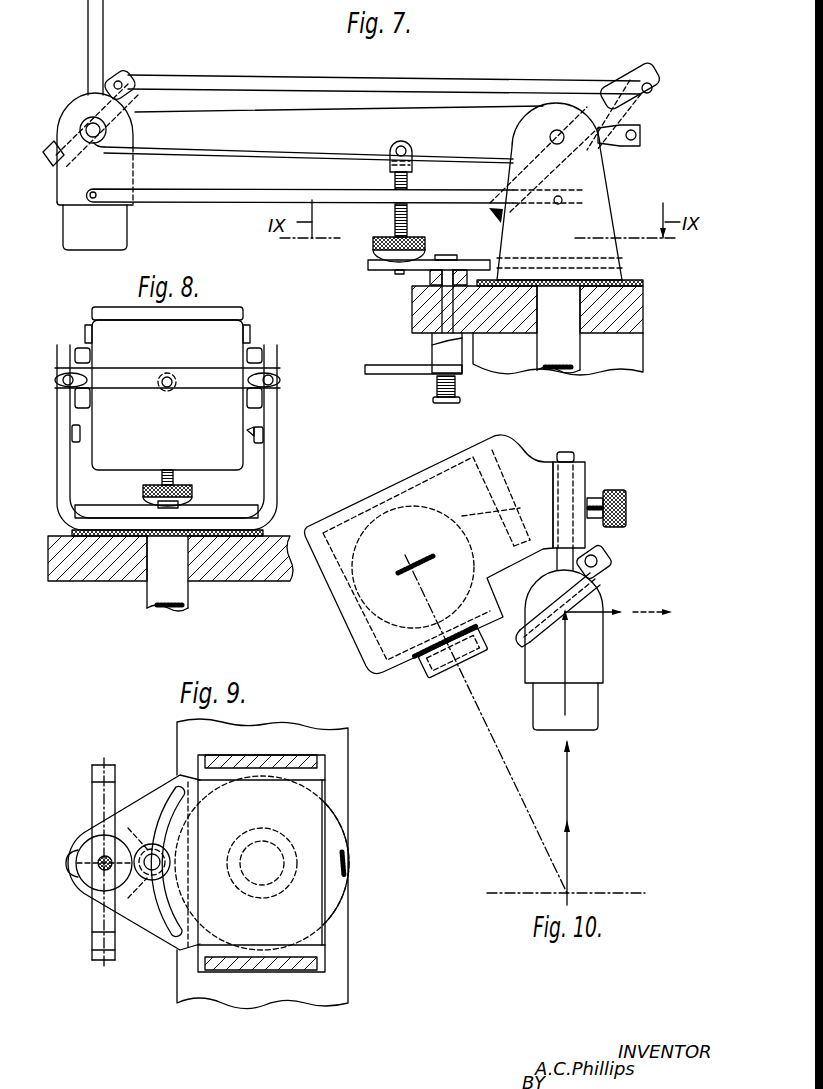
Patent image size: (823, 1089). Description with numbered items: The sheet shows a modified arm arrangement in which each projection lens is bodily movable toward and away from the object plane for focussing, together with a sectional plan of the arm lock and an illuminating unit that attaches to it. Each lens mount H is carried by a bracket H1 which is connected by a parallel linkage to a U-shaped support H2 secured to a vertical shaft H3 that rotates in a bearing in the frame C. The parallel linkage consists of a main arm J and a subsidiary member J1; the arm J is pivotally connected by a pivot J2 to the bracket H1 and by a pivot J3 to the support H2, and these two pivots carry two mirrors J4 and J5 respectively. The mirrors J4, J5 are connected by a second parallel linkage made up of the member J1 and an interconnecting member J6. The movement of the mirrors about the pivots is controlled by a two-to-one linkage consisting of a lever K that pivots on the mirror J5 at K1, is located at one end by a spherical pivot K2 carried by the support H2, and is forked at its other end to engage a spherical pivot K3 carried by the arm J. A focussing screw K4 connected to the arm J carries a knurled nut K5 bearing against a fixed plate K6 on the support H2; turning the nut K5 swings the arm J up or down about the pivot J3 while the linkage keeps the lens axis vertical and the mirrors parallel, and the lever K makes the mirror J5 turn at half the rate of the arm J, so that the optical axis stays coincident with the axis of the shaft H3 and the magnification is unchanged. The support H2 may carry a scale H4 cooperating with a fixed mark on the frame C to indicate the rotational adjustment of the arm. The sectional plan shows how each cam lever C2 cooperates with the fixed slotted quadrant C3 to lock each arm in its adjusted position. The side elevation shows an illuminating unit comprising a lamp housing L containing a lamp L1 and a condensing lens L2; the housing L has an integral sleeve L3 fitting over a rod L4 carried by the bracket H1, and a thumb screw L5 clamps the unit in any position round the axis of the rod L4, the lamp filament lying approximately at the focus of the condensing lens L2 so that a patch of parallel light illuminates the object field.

In FIG. 7, the rod L4 is at (96, 14).
In FIG. 10, the rod L4 is at (567, 453).
In FIG. 7, the bracket H1 is at (76, 176).
In FIG. 10, the bracket H1 is at (600, 655).
In FIG. 7, the lens mount H is at (78, 230).
In FIG. 10, the lens mount H is at (588, 705).
In FIG. 7, the pivot J2 is at (96, 138).
In FIG. 7, the mirror J4 is at (132, 92).
In FIG. 7, the interconnecting member J6 is at (358, 78).
In FIG. 8, the interconnecting member J6 is at (88, 325).
In FIG. 7, the mirror J5 is at (626, 78).
In FIG. 8, the mirror J5 is at (233, 413).
In FIG. 7, the pivot J3 is at (549, 136).
In FIG. 7, the U-shaped support H2 is at (598, 197).
In FIG. 8, the U-shaped support H2 is at (273, 453).
In FIG. 7, the scale H4 is at (617, 282).
In FIG. 8, the scale H4 is at (72, 532).
In FIG. 9, the scale H4 is at (332, 843).
In FIG. 7, the frame C is at (633, 318).
In FIG. 8, the frame C is at (57, 565).
In FIG. 9, the frame C is at (310, 992).
In FIG. 7, the vertical shaft H3 is at (566, 349).
In FIG. 8, the vertical shaft H3 is at (160, 592).
In FIG. 9, the vertical shaft H3 is at (258, 755).
In FIG. 7, the focussing screw K4 is at (393, 214).
In FIG. 8, the focussing screw K4 is at (160, 479).
In FIG. 9, the focussing screw K4 is at (100, 858).
In FIG. 7, the knurled nut K5 is at (372, 243).
In FIG. 8, the knurled nut K5 is at (193, 492).
In FIG. 9, the knurled nut K5 is at (78, 886).
In FIG. 7, the fixed plate K6 is at (431, 262).
In FIG. 9, the fixed plate K6 is at (123, 907).
In FIG. 7, the fixed slotted quadrant C3 is at (414, 325).
In FIG. 9, the fixed slotted quadrant C3 is at (163, 897).
In FIG. 7, the cam lever C2 is at (377, 376).
In FIG. 9, the cam lever C2 is at (68, 862).
In FIG. 7, the main member or arm J is at (185, 145).
In FIG. 8, the main member or arm J is at (80, 350).
In FIG. 7, the subsidiary member J1 is at (245, 195).
In FIG. 8, the subsidiary member J1 is at (72, 437).
In FIG. 8, the spherical pivot K2 is at (268, 386).
In FIG. 8, the lever K is at (107, 388).
In FIG. 8, the spherical pivot K3 is at (57, 380).
In FIG. 8, the pivot K1 is at (170, 390).
In FIG. 10, the lamp housing L is at (358, 655).
In FIG. 10, the lamp L1 is at (433, 560).
In FIG. 10, the condensing lens L2 is at (441, 678).
In FIG. 10, the sleeve L3 is at (584, 476).
In FIG. 10, the thumb screw L5 is at (627, 505).